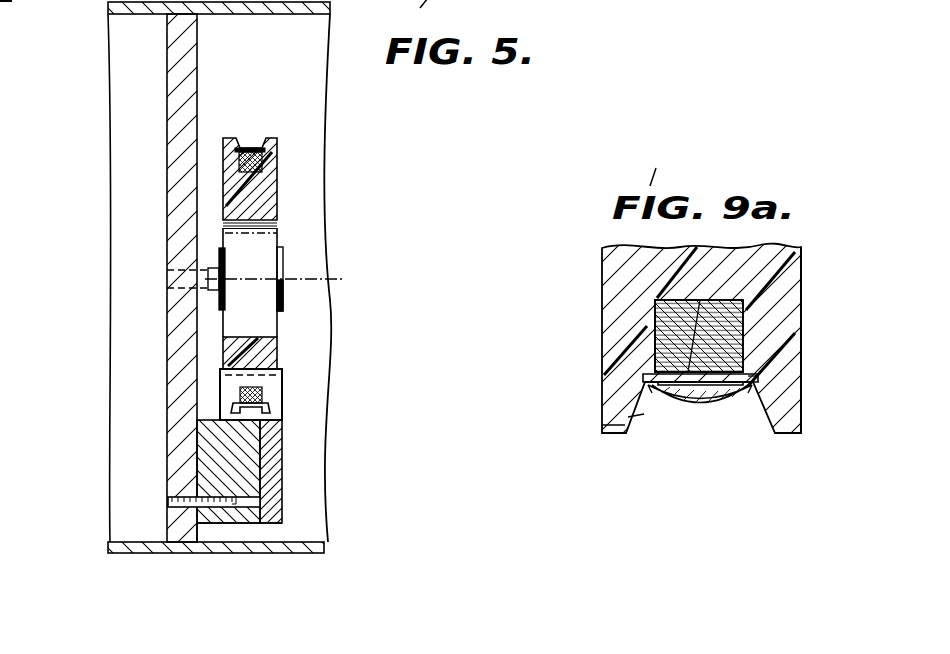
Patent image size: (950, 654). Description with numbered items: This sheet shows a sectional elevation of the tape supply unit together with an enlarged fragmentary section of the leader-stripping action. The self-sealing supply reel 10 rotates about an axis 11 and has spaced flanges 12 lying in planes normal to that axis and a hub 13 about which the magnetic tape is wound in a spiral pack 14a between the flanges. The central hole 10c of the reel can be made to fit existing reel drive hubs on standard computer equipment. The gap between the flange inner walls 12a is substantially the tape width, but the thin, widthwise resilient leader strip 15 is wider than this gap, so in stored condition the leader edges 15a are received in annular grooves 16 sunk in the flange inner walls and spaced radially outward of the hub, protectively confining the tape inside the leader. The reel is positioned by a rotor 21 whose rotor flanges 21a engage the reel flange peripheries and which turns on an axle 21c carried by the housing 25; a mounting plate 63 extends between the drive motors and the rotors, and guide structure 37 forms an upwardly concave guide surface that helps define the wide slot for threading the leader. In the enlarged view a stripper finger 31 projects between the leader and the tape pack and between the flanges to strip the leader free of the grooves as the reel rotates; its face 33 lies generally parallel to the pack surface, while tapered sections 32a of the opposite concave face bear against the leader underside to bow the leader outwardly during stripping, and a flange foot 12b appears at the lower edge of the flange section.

In FIG. 5, the supply reel 10 is at (288, 176).
In FIG. 9a, the supply reel 10 is at (810, 265).
In FIG. 5, the central hole 10c is at (278, 327).
In FIG. 5, the axis 11 is at (345, 278).
In FIG. 9a, the flanges 12 is at (605, 368).
In FIG. 9a, the flange inner walls 12a is at (748, 318).
In FIG. 9a, the housing block foot 12b is at (605, 423).
In FIG. 5, the hub 13 is at (273, 200).
In FIG. 5, the spiral pack 14a is at (262, 393).
In FIG. 9a, the spiral pack 14a is at (653, 322).
In FIG. 5, the leader strip 15 is at (253, 148).
In FIG. 9a, the leader strip 15 is at (690, 393).
In FIG. 9a, the leader edges 15a is at (760, 384).
In FIG. 9a, the grooves 16 is at (645, 383).
In FIG. 5, the rotor 21 is at (291, 248).
In FIG. 5, the rotor flanges 21a is at (284, 300).
In FIG. 5, the axle 21c is at (208, 268).
In FIG. 5, the housing 25 is at (132, 560).
In FIG. 9a, the stripper finger 31 is at (689, 373).
In FIG. 9a, the tapering face sections 32a is at (660, 388).
In FIG. 9a, the finger face 33 is at (752, 371).
In FIG. 5, the guide structure 37 is at (245, 462).
In FIG. 5, the mounting plate 63 is at (185, 417).